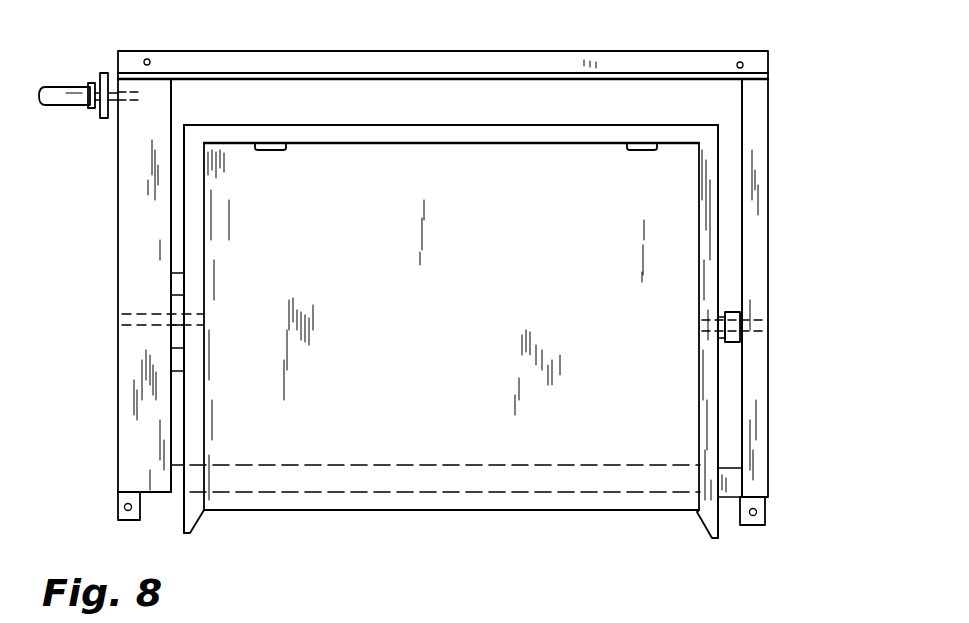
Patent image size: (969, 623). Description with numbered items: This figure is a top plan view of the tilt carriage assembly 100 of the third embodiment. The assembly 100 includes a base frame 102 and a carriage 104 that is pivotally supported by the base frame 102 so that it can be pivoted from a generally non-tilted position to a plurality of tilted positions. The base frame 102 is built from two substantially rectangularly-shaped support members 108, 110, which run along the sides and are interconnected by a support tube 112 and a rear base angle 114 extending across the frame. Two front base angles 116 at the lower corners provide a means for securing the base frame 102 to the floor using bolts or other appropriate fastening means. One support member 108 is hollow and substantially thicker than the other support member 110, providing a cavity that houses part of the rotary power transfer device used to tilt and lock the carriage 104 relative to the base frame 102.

The tilt carriage assembly 100 is at (792, 72).
The base frame 102 is at (768, 368).
The carriage 104 is at (433, 112).
The support member 108 is at (125, 400).
The support member 110 is at (768, 233).
The support tube 112 is at (733, 483).
The rear base angle 114 is at (325, 43).
The front base angle 116 is at (117, 516).